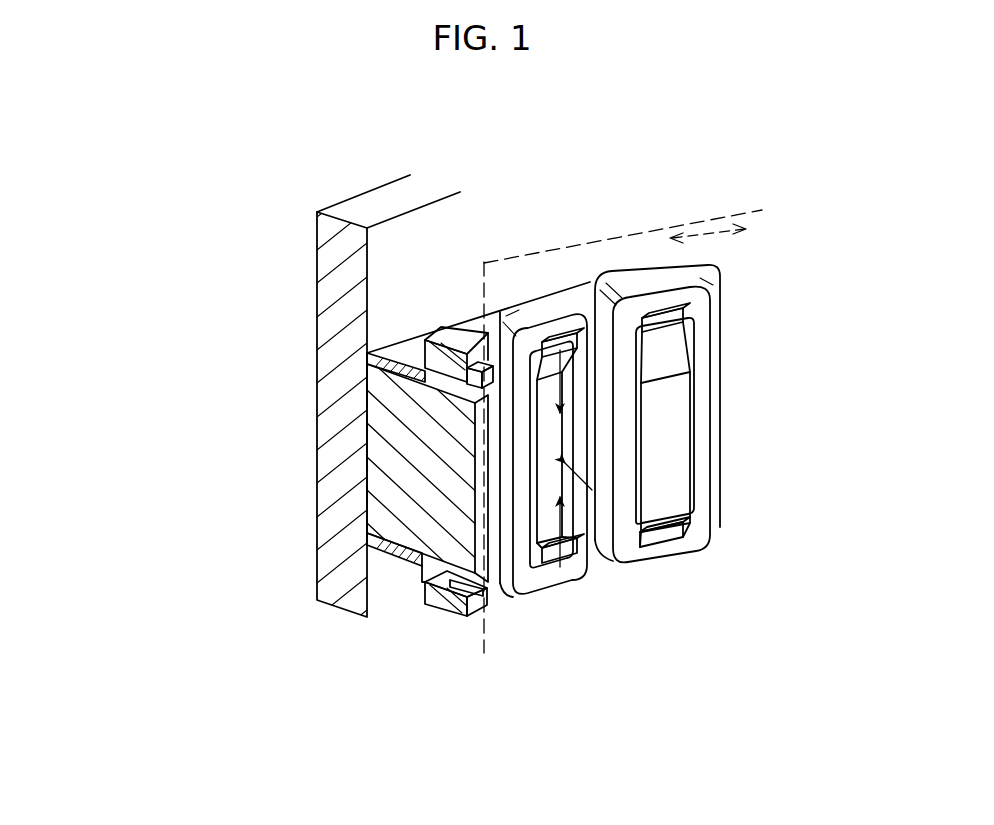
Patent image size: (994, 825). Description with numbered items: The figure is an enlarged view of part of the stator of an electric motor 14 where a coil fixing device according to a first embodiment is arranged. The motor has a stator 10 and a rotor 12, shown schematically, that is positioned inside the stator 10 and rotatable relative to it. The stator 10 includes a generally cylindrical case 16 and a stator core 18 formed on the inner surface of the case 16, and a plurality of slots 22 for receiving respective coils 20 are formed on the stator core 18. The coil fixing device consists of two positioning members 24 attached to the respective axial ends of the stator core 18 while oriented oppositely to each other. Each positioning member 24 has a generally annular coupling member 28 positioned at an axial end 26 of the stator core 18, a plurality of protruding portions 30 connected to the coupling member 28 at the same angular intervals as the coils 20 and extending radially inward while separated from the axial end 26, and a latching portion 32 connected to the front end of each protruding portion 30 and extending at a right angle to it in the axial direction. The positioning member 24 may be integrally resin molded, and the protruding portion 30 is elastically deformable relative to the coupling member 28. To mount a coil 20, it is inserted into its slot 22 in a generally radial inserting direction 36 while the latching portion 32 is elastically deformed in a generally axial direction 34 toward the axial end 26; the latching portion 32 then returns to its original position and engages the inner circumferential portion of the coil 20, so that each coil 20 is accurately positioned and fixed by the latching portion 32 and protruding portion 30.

The stator 10 is at (303, 288).
The rotor 12 is at (693, 217).
The electric motor 14 is at (147, 213).
The case 16 is at (374, 212).
The stator core 18 is at (412, 475).
The coil 20 is at (647, 287).
The slot 22 is at (510, 600).
The positioning member 24 is at (418, 316).
The axial end 26 is at (705, 340).
The coupling member 28 is at (405, 352).
The protruding portion 30 is at (440, 362).
The latching portion 32 is at (478, 385).
The direction 34 is at (546, 376).
The inserting direction 36 is at (653, 490).